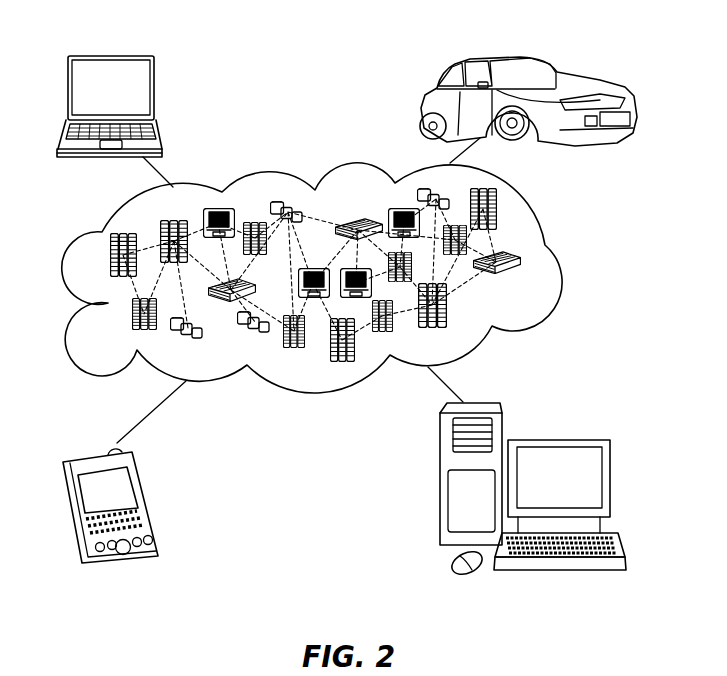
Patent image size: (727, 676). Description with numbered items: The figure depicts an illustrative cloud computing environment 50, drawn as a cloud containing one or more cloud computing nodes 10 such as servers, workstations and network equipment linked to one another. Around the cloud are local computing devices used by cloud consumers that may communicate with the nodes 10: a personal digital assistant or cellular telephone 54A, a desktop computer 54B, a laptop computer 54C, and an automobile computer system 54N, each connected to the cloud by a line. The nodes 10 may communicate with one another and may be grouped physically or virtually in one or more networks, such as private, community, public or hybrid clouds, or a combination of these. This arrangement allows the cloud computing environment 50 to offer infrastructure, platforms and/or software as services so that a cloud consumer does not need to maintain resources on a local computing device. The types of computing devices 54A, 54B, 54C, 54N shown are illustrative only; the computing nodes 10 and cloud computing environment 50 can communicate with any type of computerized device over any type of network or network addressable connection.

The cloud computing nodes 10 is at (528, 284).
The cloud computing environment 50 is at (559, 258).
The personal digital assistant (PDA) or cellular telephone 54A is at (147, 497).
The desktop computer 54B is at (555, 439).
The laptop computer 54C is at (155, 92).
The automobile computer system 54N is at (416, 100).